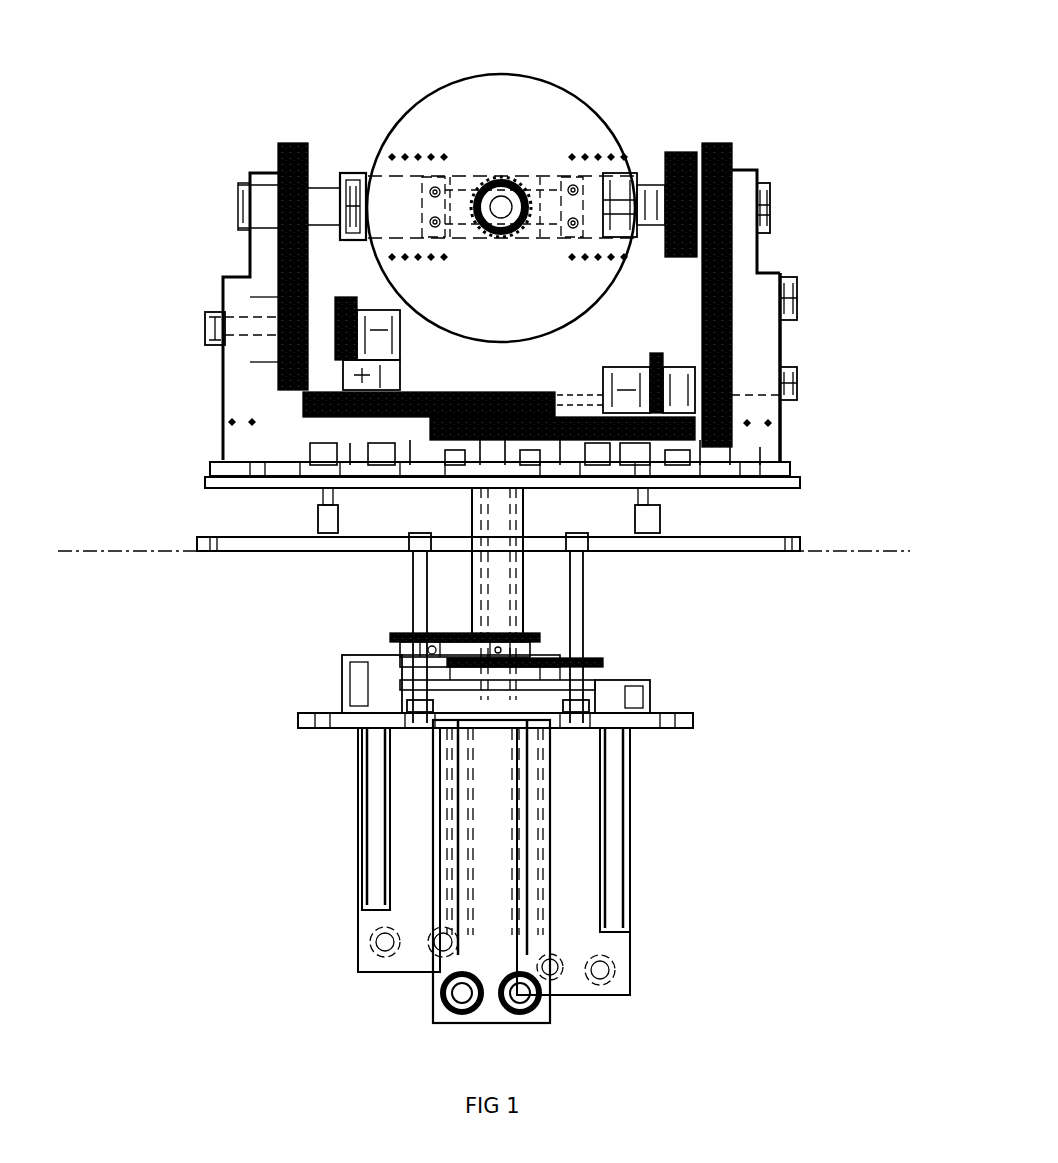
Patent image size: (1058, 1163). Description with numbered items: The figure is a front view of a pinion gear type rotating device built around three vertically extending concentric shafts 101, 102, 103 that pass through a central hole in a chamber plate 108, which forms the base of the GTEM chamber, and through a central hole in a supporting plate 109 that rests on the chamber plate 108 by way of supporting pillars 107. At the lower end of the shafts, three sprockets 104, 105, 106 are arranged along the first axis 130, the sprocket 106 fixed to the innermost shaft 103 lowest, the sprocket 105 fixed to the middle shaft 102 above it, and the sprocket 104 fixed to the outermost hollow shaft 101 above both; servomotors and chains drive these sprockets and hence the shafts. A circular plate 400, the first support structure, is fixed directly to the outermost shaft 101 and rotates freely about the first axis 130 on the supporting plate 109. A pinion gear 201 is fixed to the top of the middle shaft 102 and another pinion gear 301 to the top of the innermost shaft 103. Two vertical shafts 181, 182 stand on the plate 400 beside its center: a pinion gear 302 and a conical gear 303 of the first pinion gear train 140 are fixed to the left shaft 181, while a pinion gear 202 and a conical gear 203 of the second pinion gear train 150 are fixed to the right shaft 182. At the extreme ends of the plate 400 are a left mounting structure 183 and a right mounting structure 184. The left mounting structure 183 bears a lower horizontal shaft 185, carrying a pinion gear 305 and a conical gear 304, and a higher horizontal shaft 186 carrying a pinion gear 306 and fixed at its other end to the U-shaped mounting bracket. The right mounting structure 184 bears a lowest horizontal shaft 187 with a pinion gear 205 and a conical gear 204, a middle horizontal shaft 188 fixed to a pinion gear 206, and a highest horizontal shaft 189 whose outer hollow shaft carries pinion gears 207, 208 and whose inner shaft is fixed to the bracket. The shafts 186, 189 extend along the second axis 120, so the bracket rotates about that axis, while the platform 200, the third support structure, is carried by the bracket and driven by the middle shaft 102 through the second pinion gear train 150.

The outermost hollow concentric shaft 101 is at (530, 592).
The middle hollow concentric shaft 102 is at (470, 578).
The innermost shaft 103 is at (517, 627).
The sprocket 104 is at (493, 630).
The sprocket 105 is at (387, 690).
The sprocket 106 is at (507, 752).
The supporting pillar 107 is at (314, 515).
The chamber plate 108 is at (210, 555).
The supporting plate 109 is at (230, 490).
The second axis 120 is at (928, 205).
The first axis 130 is at (500, 130).
The first pinion gear train 140 is at (118, 245).
The second pinion gear train 150 is at (865, 240).
The left vertical shaft 181 is at (366, 445).
The right vertical shaft 182 is at (620, 553).
The left mounting structure 183 is at (236, 454).
The right mounting structure 184 is at (737, 168).
The lower horizontal shaft 185 is at (400, 340).
The higher horizontal shaft 186 is at (324, 203).
The lowest horizontal shaft 187 is at (774, 378).
The middle horizontal shaft 188 is at (772, 290).
The highest horizontal shaft 189 is at (775, 182).
The platform 200 is at (568, 112).
The pinion gear 201 is at (540, 474).
The pinion gear 202 is at (650, 494).
The conical gear 203 is at (700, 414).
The conical gear 204 is at (700, 398).
The pinion gear 205 is at (737, 353).
The pinion gear 206 is at (737, 303).
The pinion gear 207 is at (728, 258).
The pinion gear 208 is at (697, 240).
The pinion gear 301 is at (490, 395).
The pinion gear 302 is at (303, 408).
The conical gear 303 is at (292, 362).
The conical gear 304 is at (208, 326).
The pinion gear 305 is at (292, 305).
The pinion gear 306 is at (278, 213).
The circular plate 400 is at (240, 480).